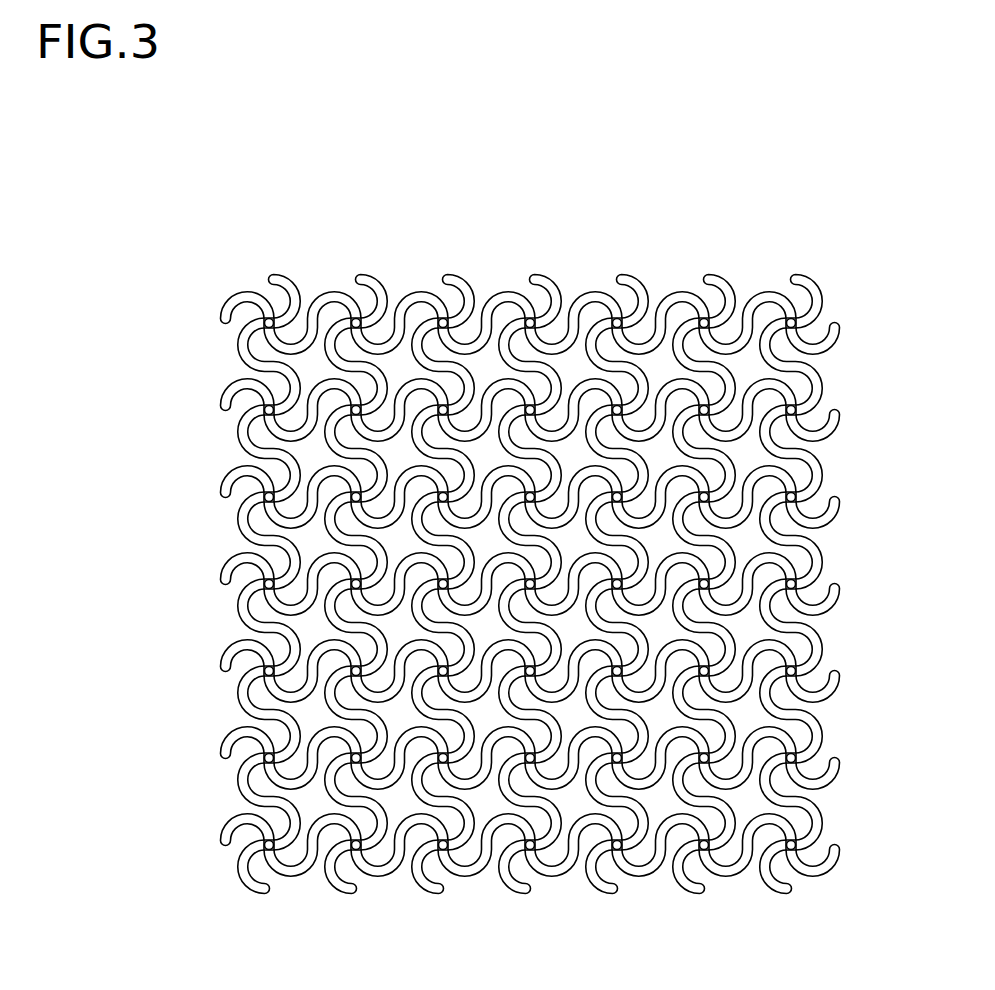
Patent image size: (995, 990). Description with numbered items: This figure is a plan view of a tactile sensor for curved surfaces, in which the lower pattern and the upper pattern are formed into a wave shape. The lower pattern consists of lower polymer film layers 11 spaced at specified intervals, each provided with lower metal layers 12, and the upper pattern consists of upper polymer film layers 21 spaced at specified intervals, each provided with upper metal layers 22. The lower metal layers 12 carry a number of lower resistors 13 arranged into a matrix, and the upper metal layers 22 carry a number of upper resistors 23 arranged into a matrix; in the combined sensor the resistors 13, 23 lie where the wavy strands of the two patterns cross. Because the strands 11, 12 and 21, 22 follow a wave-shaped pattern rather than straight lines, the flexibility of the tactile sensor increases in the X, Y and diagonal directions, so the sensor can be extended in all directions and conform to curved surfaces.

The lower polymer film layer 11 is at (530, 549).
The lower metal layer 12 is at (278, 281).
The upper polymer film layer 21 is at (470, 579).
The upper metal layer 22 is at (220, 318).
The lower resistor 13 is at (489, 532).
The upper resistor 23 is at (271, 320).